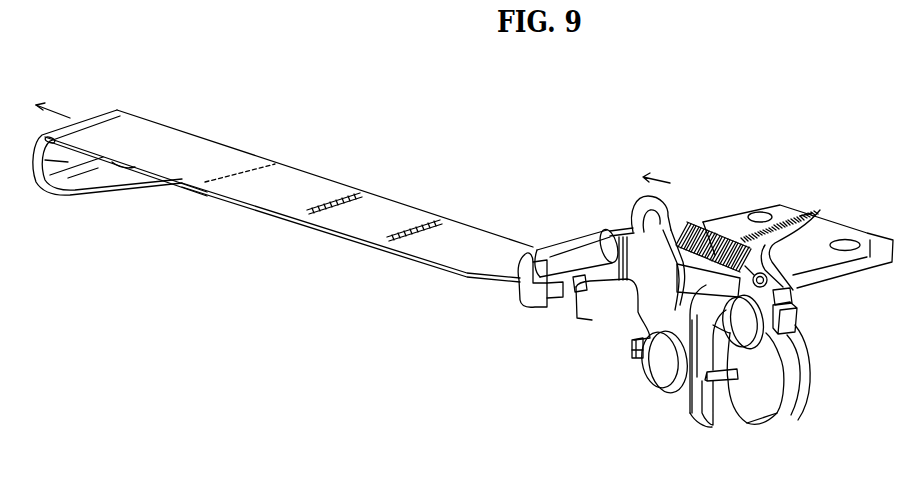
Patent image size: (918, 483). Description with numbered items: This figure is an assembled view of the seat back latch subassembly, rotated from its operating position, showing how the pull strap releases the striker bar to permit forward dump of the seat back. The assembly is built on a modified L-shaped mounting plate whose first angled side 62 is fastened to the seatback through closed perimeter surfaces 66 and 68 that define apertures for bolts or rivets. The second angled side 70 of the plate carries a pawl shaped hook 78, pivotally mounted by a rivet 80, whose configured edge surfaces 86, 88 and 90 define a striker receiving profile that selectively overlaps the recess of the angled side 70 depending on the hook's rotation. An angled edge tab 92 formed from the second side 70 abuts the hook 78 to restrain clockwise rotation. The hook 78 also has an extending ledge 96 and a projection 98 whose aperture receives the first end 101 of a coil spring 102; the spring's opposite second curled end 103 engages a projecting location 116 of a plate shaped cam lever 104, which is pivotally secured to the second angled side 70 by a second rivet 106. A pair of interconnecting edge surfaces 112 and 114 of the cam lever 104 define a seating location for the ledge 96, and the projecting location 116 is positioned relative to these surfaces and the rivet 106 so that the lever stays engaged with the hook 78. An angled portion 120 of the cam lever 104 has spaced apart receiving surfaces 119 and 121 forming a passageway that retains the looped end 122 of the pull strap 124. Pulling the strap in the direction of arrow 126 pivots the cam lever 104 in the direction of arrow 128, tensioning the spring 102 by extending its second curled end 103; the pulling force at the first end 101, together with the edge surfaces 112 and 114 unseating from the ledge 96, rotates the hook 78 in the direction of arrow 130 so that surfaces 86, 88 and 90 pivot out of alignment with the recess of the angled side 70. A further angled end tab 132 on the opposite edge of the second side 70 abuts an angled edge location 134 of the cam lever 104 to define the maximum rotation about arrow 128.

The first angled side 62 is at (835, 225).
The closed perimeter extending surface 66 is at (855, 242).
The closed perimeter extending surface 68 is at (762, 217).
The second angled side 70 is at (812, 385).
The pawl shaped hook 78 is at (770, 415).
The rivet 80 is at (800, 350).
The configured edge surface 86 is at (748, 374).
The configured edge surface 88 is at (730, 400).
The configured edge surface 90 is at (705, 392).
The angled edge tab 92 is at (797, 322).
The extending ledge 96 is at (708, 286).
The projection 98 is at (818, 214).
The first end of coil spring 101 is at (793, 287).
The coil spring 102 is at (705, 230).
The second curled end of spring 103 is at (630, 228).
The cam lever 104 is at (638, 293).
The second rivet 106 is at (660, 375).
The edge surface of cam lever 112 is at (689, 356).
The edge surface of cam lever 114 is at (640, 258).
The projecting location 116 is at (663, 210).
The receiving surface 119 is at (570, 298).
The angled portion 120 is at (527, 293).
The receiving surface 121 is at (578, 300).
The looped end 122 is at (550, 247).
The pull strap 124 is at (307, 187).
The arrow 126 is at (55, 108).
The arrow 128 is at (667, 192).
The arrow 130 is at (793, 300).
The angled end tab 132 is at (636, 362).
The angled edge location 134 is at (633, 340).